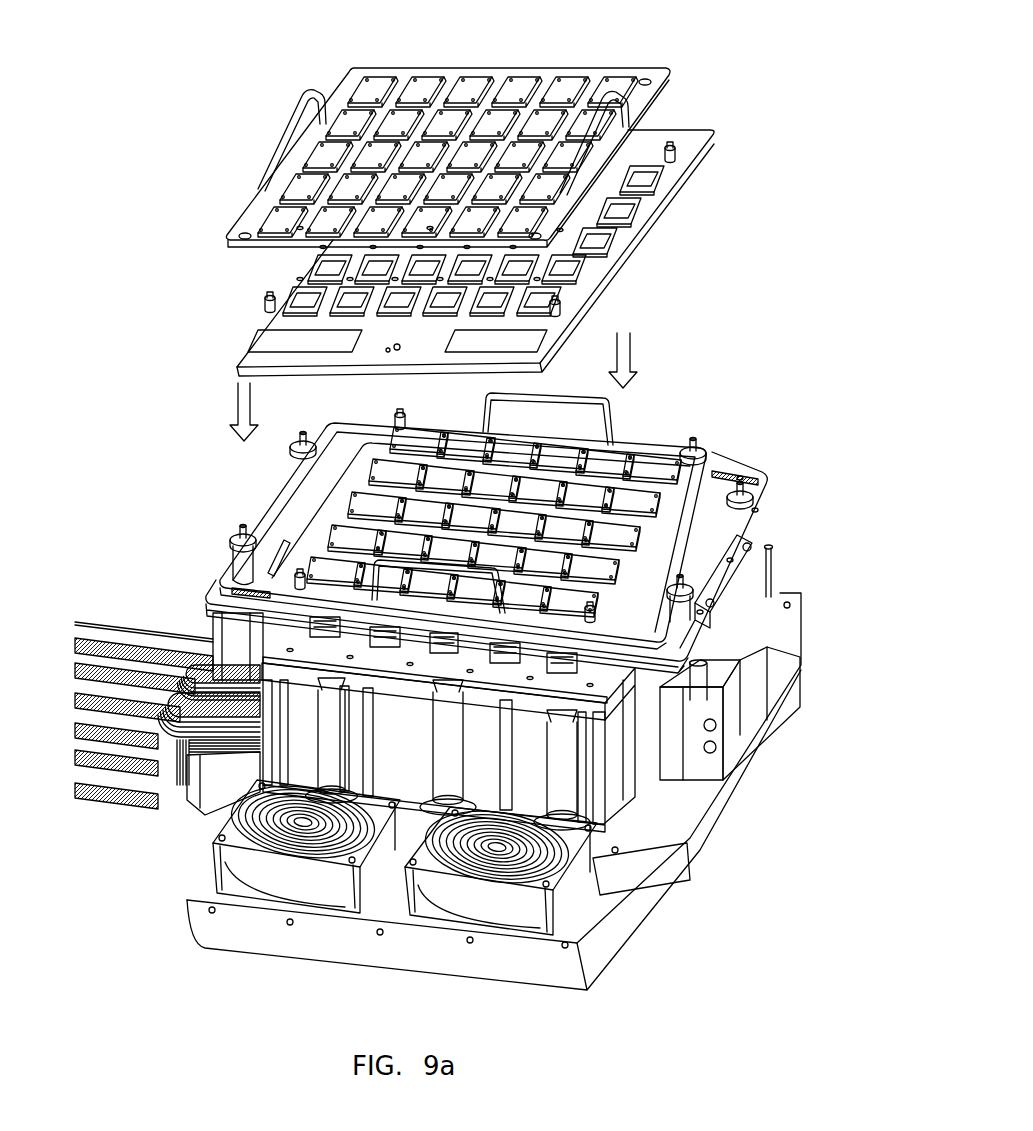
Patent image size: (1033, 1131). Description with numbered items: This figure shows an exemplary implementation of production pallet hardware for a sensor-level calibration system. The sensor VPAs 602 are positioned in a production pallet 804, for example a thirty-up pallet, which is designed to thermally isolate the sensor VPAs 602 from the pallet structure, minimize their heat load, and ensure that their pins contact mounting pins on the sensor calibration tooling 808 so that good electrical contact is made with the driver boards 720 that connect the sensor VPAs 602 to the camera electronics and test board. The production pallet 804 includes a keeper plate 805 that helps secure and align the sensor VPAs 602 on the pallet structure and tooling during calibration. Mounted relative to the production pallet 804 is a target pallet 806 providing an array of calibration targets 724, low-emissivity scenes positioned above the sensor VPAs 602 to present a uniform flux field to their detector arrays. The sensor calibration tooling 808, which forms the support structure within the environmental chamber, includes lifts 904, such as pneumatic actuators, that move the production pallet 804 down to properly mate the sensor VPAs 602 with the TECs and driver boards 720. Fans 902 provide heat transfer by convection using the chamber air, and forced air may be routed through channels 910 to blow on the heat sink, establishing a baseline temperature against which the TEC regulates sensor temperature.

The sensor VPA 602 is at (310, 262).
The driver board 720 is at (565, 760).
The calibration target 724 is at (613, 83).
The production pallet 804 is at (230, 333).
The keeper plate 805 is at (262, 298).
The target pallet 806 is at (222, 233).
The sensor calibration tooling 808 is at (195, 620).
The fan 902 is at (590, 877).
The lift 904 is at (225, 522).
The channel 910 is at (533, 747).